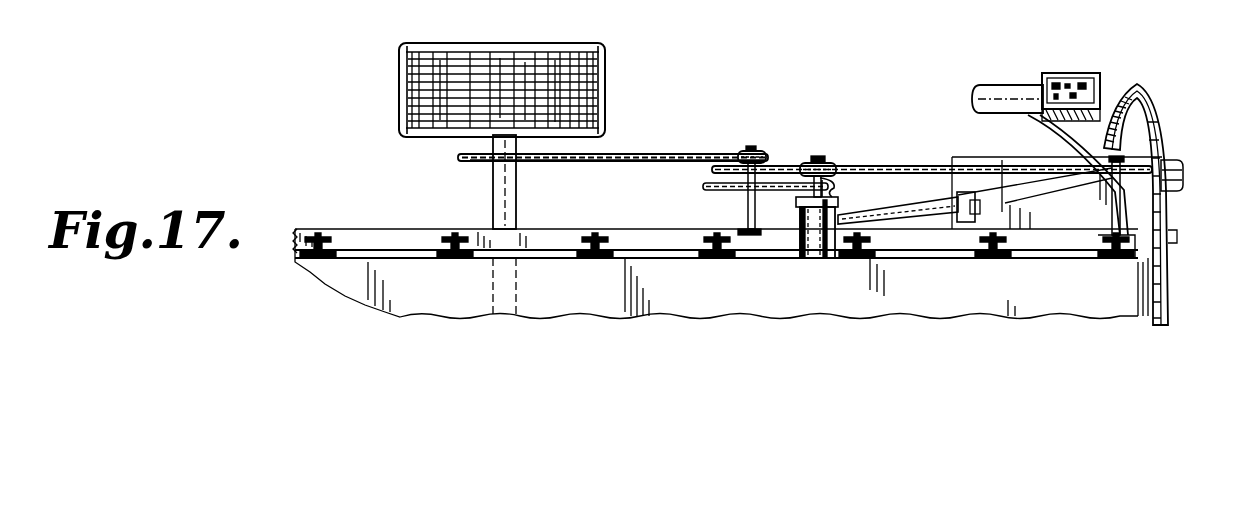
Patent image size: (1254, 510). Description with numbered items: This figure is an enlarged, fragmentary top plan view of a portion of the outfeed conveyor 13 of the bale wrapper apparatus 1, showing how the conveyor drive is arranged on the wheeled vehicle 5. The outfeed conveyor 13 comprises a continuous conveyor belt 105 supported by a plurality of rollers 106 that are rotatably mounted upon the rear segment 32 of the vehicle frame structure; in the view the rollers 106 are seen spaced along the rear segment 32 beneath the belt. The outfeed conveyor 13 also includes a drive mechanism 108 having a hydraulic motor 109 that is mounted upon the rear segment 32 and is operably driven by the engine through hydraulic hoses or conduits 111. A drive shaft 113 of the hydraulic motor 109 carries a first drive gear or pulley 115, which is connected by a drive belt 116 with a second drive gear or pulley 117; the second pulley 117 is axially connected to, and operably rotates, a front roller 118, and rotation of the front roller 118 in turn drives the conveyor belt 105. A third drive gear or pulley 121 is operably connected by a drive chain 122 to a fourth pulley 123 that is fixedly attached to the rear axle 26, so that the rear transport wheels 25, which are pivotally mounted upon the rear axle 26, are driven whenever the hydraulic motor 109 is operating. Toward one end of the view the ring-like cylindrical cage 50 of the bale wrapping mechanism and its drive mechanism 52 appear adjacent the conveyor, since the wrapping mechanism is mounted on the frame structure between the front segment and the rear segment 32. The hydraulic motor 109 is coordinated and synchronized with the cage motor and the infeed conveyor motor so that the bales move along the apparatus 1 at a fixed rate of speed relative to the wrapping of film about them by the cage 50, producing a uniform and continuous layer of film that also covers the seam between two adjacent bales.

The bale wrapper apparatus 1 is at (422, 204).
The wheeled vehicle 5 is at (477, 228).
The outfeed conveyor 13 is at (1045, 317).
The rear transport wheels 25 is at (610, 90).
The rear axle 26 is at (518, 200).
The rear segment 32 is at (565, 229).
The cylindrical cage 50 is at (1162, 124).
The drive mechanism 52 is at (1080, 78).
The conveyor belt 105 is at (950, 317).
The rollers 106 is at (425, 262).
The drive mechanism 108 is at (827, 131).
The hydraulic motor 109 is at (805, 250).
The hydraulic hoses 111 is at (960, 200).
The drive shaft 113 is at (830, 193).
The first drive gear or pulley 115 is at (781, 163).
The drive belt 116 is at (902, 166).
The second drive gear or pulley 117 is at (1162, 157).
The front roller 118 is at (1098, 262).
The pinion 121 is at (742, 149).
The drive bar 122 is at (650, 156).
The fourth pulley 123 is at (458, 157).